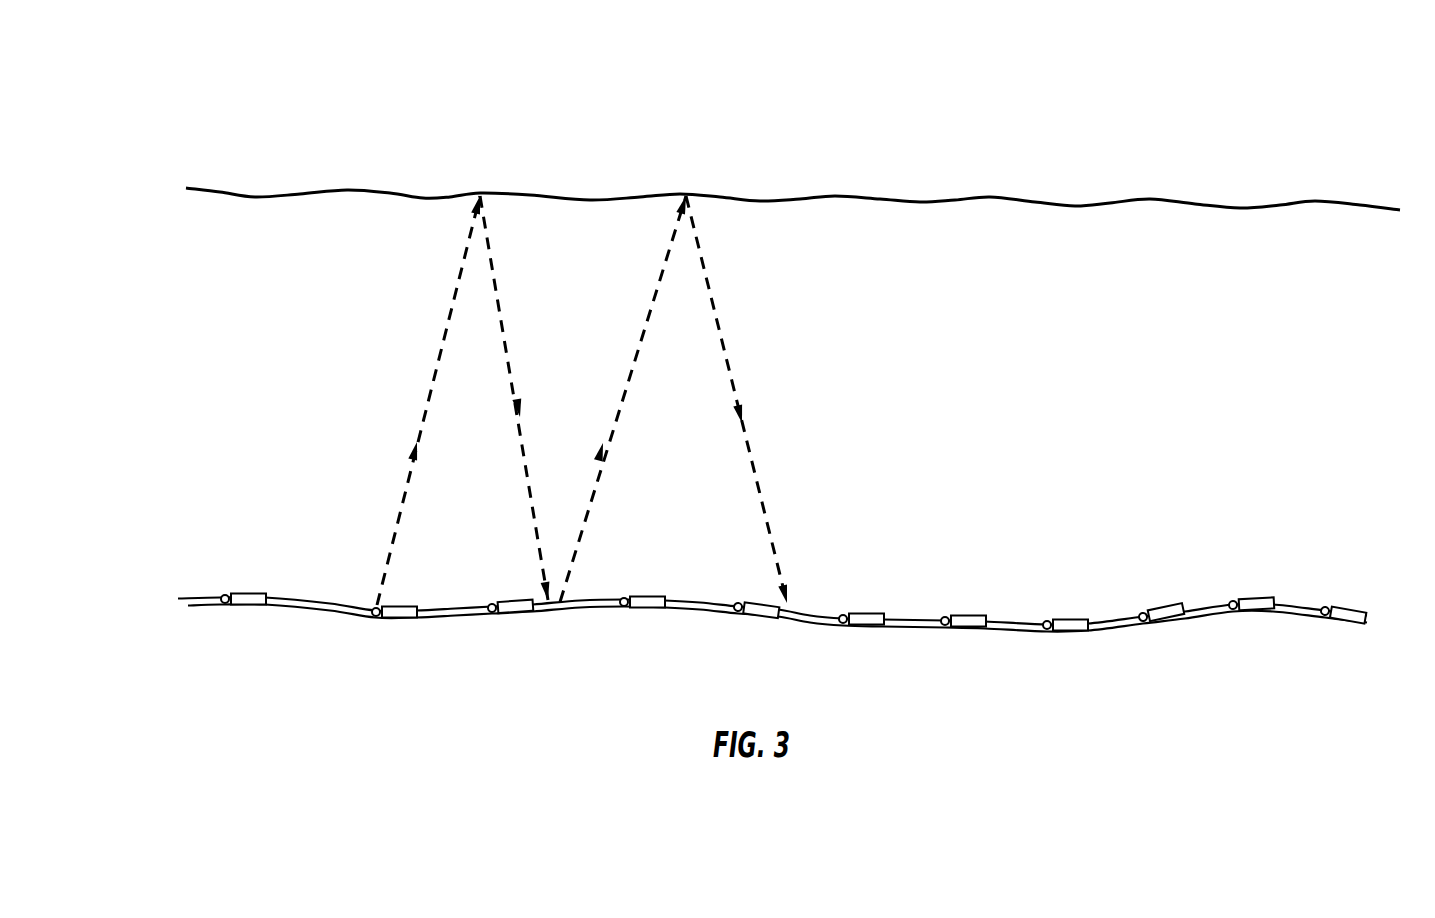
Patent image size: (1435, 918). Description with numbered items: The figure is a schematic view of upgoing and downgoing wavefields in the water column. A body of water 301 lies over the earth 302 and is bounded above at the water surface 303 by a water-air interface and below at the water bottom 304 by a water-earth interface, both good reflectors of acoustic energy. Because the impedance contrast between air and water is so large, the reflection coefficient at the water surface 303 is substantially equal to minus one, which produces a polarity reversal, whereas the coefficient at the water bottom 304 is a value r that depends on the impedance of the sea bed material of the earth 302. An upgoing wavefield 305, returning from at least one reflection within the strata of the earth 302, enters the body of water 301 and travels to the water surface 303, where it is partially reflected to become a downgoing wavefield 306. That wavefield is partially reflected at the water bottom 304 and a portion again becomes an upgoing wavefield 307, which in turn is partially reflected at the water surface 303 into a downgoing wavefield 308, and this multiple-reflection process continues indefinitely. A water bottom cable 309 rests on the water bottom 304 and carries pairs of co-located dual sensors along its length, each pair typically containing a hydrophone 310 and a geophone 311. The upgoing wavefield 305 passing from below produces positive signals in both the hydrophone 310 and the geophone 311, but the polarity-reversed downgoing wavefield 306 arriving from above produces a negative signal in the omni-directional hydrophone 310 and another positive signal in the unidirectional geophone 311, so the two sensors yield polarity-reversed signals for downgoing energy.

The body of water 301 is at (288, 205).
The earth 302 is at (772, 618).
The water surface 303 is at (348, 188).
The water bottom 304 is at (204, 615).
The upgoing wavefield 305 is at (427, 407).
The downgoing wavefield 306 is at (517, 393).
The upgoing wavefield 307 is at (615, 410).
The downgoing wavefield 308 is at (735, 393).
The water bottom cable 309 is at (1288, 603).
The hydrophone 310 is at (377, 602).
The geophone 311 is at (398, 607).